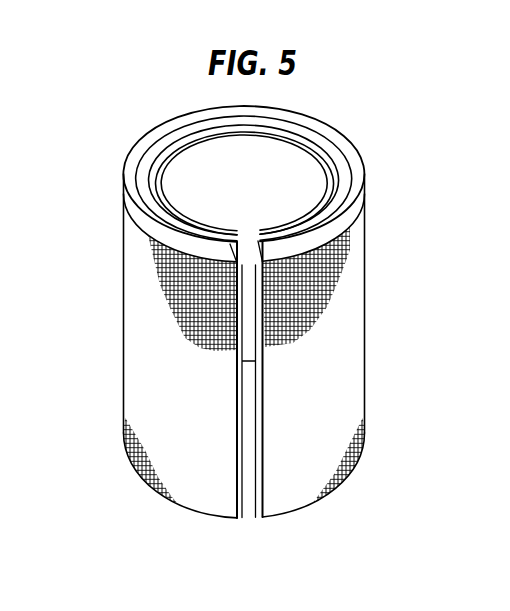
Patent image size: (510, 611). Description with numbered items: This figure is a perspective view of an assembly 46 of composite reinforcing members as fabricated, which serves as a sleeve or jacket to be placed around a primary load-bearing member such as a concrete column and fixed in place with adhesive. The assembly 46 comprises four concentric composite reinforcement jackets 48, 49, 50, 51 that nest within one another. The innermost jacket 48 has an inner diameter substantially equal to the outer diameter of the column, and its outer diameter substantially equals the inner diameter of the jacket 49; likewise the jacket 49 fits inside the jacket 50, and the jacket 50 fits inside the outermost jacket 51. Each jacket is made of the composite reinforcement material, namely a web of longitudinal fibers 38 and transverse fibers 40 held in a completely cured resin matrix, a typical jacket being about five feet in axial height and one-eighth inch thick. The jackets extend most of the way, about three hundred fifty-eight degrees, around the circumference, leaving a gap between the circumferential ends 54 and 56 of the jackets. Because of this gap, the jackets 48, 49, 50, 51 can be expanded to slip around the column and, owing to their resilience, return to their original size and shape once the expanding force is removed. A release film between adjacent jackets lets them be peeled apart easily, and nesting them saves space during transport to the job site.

The assembly 46 is at (137, 131).
The innermost jacket 48 is at (150, 155).
The jacket 49 is at (148, 184).
The jacket 50 is at (147, 205).
The jacket 51 is at (130, 258).
The longitudinal fibers 38 is at (173, 307).
The transverse fibers 40 is at (192, 345).
The circumferential end 54 is at (237, 483).
The circumferential end 56 is at (259, 297).